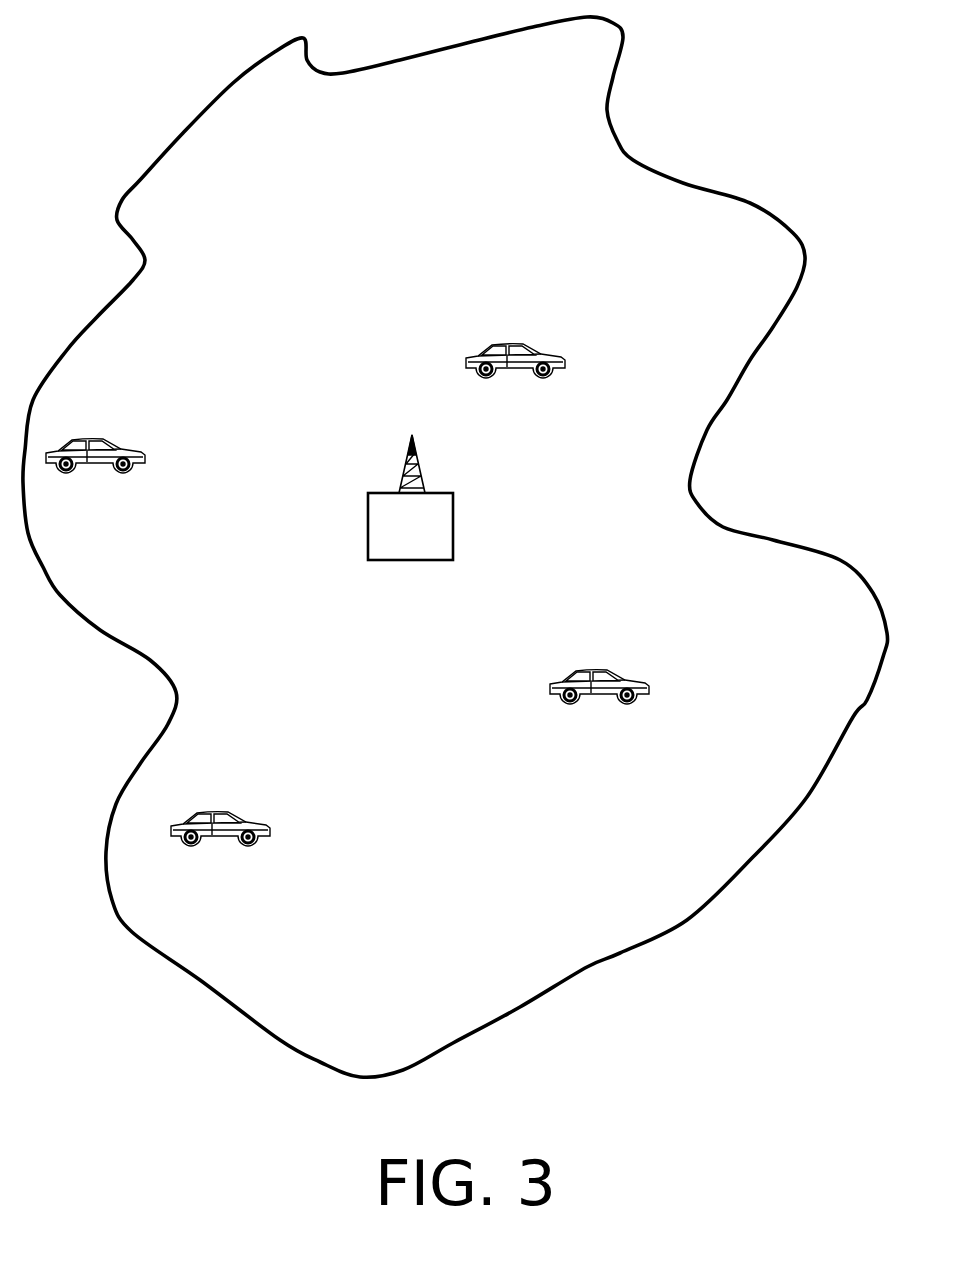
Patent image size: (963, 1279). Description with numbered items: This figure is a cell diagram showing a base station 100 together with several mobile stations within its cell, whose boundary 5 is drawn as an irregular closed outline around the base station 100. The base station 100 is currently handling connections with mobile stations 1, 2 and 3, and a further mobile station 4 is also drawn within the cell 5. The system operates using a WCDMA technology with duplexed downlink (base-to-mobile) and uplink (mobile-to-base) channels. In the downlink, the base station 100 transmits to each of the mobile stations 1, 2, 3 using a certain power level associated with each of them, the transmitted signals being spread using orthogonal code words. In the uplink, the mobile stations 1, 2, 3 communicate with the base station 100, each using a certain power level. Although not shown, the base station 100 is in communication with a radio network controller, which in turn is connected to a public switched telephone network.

The mobile station 1 is at (610, 670).
The mobile station 2 is at (237, 815).
The mobile station 3 is at (530, 345).
The mobile station MS 4 is at (110, 436).
The cell boundary / service area 5 is at (755, 852).
The base station 100 is at (453, 508).